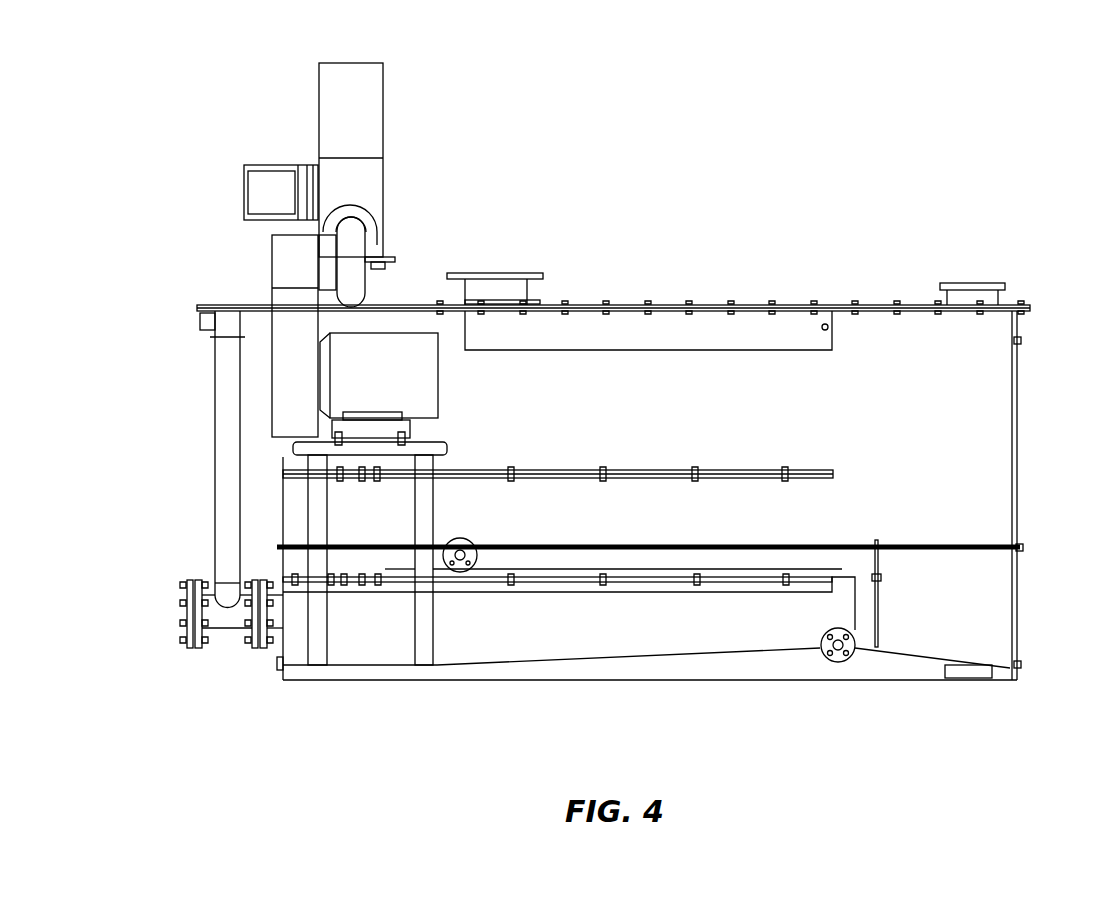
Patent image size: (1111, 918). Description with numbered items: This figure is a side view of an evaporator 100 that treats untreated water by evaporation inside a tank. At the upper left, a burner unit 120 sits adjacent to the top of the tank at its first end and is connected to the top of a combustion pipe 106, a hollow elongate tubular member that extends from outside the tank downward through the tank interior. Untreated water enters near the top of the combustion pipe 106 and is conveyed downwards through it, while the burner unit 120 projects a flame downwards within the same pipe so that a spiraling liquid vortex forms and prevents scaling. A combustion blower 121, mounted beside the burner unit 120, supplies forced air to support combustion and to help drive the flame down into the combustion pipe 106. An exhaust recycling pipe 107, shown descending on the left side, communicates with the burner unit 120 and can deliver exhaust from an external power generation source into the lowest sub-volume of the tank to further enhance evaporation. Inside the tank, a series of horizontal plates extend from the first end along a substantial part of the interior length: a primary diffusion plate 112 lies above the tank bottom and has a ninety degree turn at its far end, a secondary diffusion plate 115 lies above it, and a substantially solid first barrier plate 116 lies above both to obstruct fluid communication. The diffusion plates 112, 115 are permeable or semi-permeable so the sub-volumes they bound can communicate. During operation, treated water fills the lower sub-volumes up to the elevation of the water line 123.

The evaporator 100 is at (203, 98).
The burner unit 120 is at (370, 177).
The combustion blower 121 is at (288, 420).
The exhaust recycling pipe 107 is at (225, 457).
The combustion pipe 106 is at (352, 533).
The first barrier plate 116 is at (833, 473).
The secondary diffusion plate 115 is at (573, 571).
The primary diffusion plate 112 is at (757, 588).
The water line 123 is at (1003, 540).